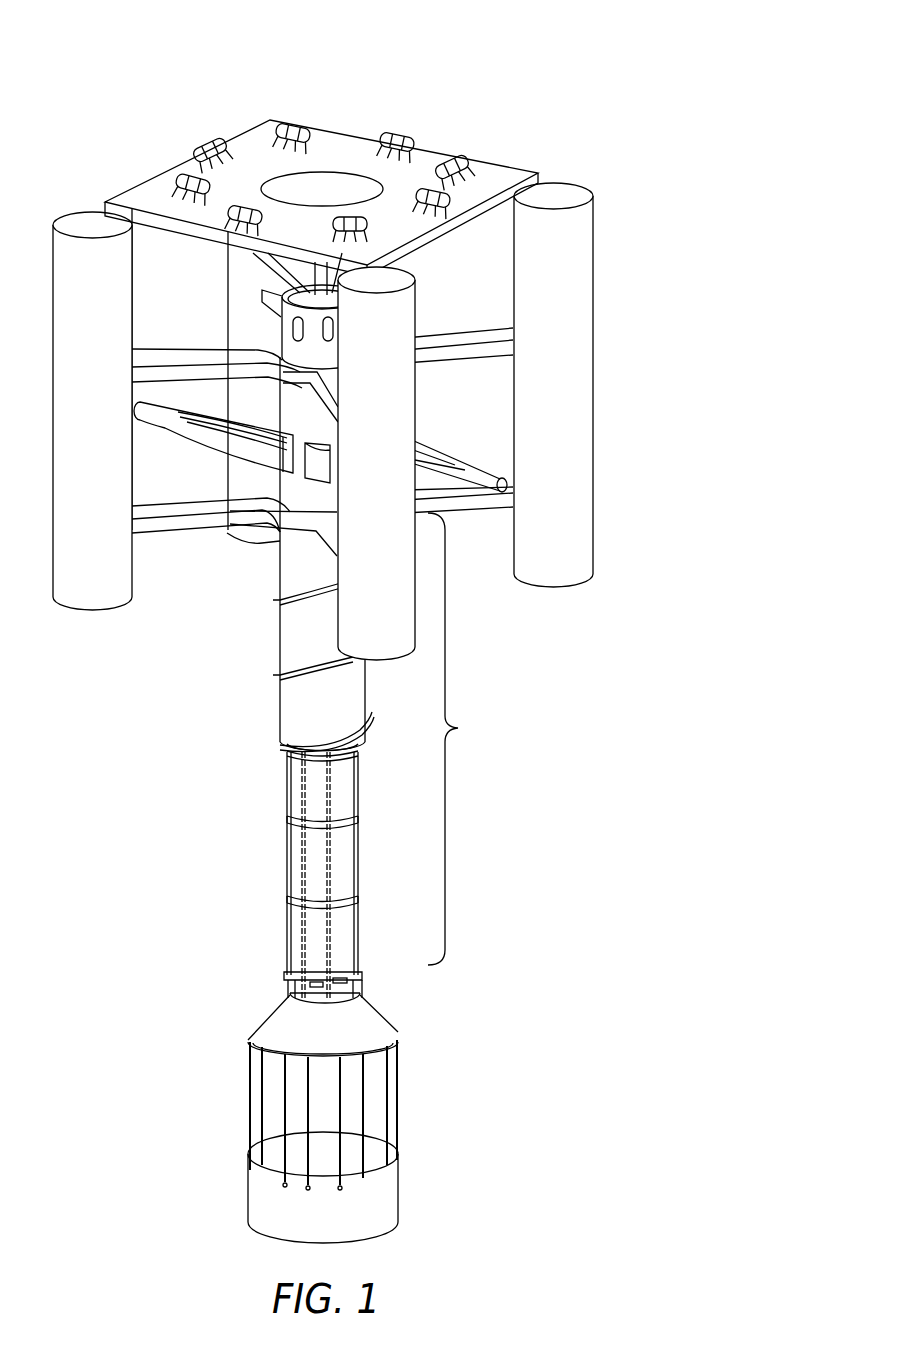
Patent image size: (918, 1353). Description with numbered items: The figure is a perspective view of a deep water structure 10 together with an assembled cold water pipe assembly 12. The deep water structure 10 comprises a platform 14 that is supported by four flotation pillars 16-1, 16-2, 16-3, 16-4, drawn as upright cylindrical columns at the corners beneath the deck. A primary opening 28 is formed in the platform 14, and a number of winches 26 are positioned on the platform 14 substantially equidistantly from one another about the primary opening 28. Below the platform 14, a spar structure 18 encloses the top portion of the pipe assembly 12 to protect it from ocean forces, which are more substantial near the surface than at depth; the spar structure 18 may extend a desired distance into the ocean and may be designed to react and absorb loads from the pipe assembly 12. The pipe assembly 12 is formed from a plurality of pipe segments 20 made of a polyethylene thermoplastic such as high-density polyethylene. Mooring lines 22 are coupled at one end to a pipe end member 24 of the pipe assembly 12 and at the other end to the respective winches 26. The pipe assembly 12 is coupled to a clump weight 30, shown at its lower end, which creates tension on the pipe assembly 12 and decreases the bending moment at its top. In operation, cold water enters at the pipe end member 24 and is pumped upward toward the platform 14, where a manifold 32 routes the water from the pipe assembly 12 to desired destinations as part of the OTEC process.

The deep water structure 10 is at (508, 83).
The cold water pipe assembly 12 is at (459, 739).
The platform 14 is at (519, 175).
The flotation pillar 16-1 is at (534, 472).
The flotation pillar 16-2 is at (358, 528).
The flotation pillar 16-3 is at (73, 472).
The flotation pillar 16-4 is at (226, 318).
The spar structure 18 is at (288, 618).
The pipe segment 20 is at (297, 857).
The mooring line 22 is at (303, 787).
The pipe end member 24 is at (290, 998).
The winch 26 is at (381, 130).
The primary opening 28 is at (334, 206).
The clump weight 30 is at (308, 1219).
The manifold 32 is at (203, 437).